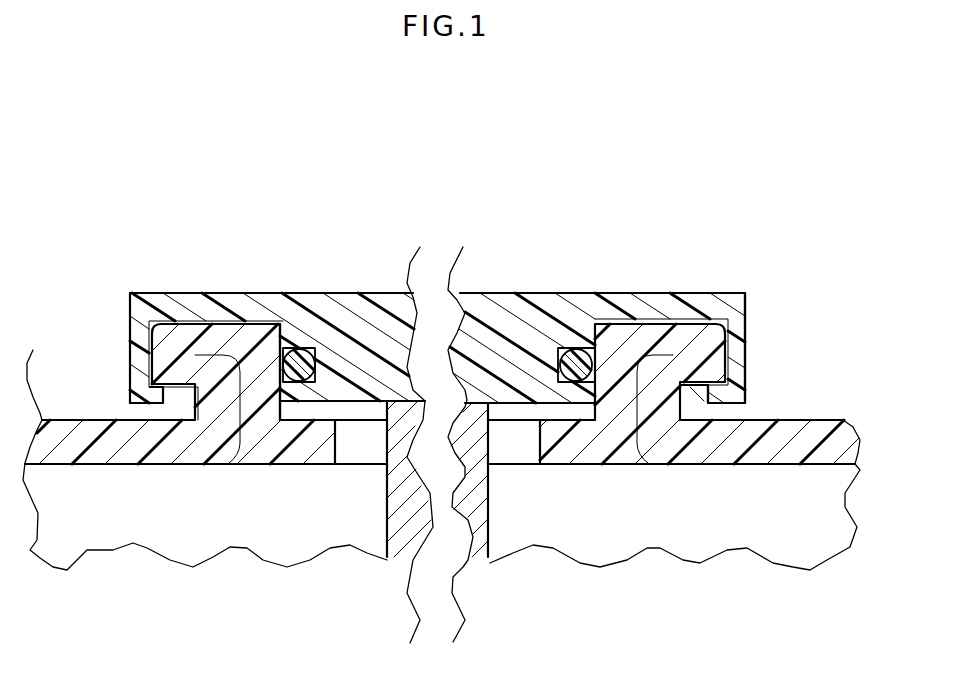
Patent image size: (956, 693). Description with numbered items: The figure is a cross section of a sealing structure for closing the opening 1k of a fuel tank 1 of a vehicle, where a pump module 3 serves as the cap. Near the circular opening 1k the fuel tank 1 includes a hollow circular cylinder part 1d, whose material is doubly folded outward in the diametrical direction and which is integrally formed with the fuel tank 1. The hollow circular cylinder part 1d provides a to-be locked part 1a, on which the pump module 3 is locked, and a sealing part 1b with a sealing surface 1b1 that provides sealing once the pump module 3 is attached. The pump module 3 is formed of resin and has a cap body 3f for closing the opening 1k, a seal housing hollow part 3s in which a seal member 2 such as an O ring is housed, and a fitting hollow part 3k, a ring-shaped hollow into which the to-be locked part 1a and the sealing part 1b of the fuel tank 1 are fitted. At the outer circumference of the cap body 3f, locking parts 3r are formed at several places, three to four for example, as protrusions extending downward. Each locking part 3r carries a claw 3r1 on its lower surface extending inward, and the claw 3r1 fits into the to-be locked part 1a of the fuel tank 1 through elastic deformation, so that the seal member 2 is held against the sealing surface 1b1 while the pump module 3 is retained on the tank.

The fuel tank 1 is at (67, 450).
The to-be locked part 1a is at (170, 376).
The sealing part 1b is at (285, 382).
The sealing surface 1b1 is at (280, 380).
The hollow circular cylinder part 1d is at (220, 316).
The opening 1k is at (512, 440).
The seal member 2 is at (296, 350).
The pump module 3 is at (657, 288).
The cap body 3f is at (520, 330).
The fitting hollow part 3k is at (181, 340).
The locking part 3r is at (140, 360).
The claw 3r1 is at (158, 389).
The seal housing hollow part 3s is at (332, 347).